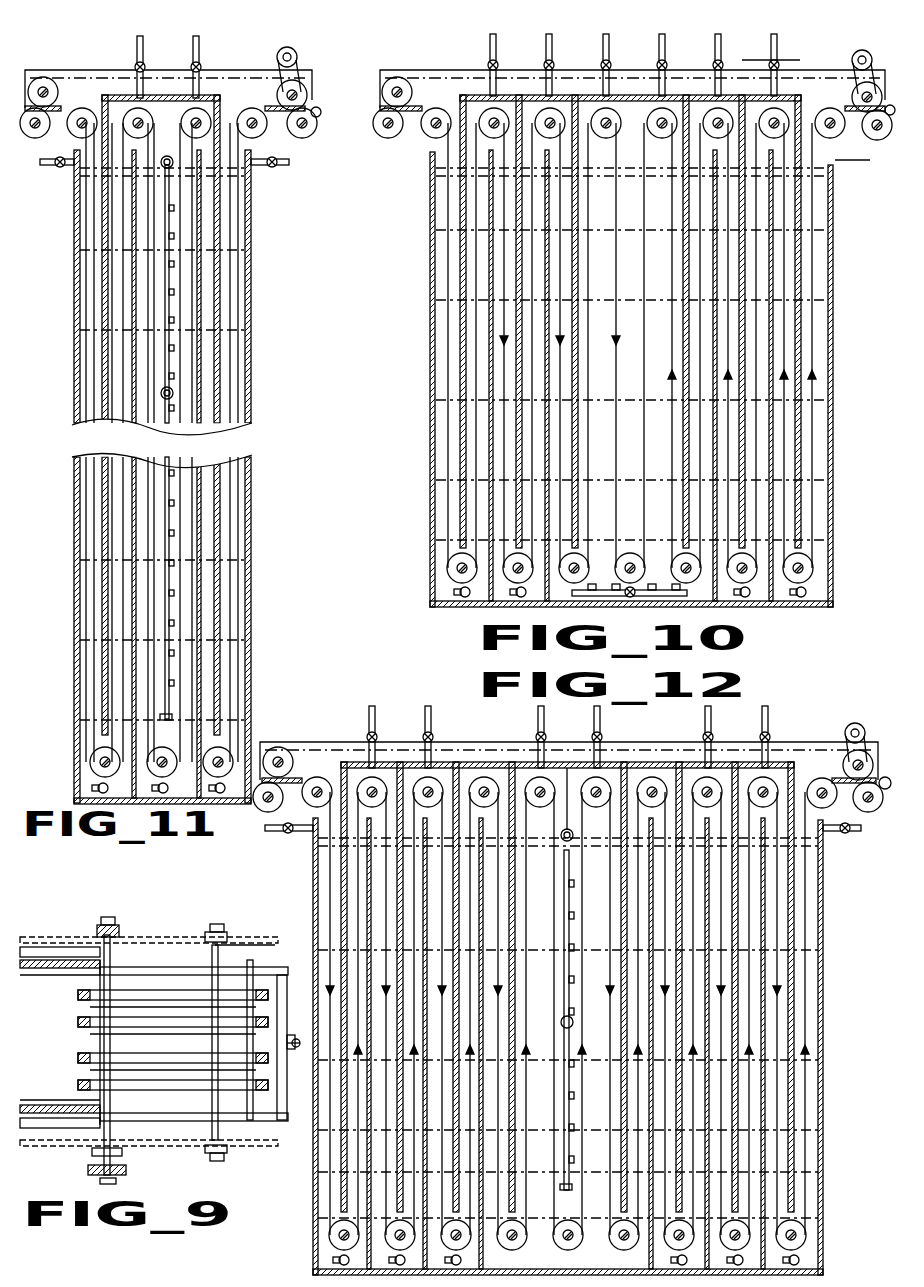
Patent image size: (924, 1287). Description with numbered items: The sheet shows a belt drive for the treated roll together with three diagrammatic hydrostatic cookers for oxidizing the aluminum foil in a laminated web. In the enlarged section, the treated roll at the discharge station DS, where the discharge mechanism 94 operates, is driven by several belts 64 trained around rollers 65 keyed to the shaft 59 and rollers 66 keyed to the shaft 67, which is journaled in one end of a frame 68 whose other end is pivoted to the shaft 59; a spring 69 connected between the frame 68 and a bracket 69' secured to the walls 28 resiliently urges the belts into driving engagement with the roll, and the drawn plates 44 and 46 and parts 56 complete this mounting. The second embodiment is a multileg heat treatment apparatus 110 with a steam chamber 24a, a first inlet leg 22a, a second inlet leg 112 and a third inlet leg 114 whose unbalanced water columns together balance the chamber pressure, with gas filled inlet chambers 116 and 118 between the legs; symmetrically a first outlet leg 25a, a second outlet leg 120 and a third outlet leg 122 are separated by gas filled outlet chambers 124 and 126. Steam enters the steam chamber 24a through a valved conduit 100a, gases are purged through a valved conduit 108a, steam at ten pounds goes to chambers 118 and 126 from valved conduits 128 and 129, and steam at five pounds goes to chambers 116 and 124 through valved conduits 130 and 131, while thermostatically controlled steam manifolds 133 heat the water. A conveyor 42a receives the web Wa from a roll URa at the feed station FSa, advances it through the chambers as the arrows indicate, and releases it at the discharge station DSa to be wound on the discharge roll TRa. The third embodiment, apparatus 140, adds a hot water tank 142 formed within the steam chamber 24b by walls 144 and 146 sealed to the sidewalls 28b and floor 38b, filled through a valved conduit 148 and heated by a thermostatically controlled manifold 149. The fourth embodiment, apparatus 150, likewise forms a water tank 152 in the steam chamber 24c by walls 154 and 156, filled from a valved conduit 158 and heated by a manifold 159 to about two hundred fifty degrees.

In FIG. 11, the heat treatment apparatus 140 is at (262, 38).
In FIG. 11, the sidewalls 28b is at (100, 72).
In FIG. 11, the steam chamber 24b is at (165, 108).
In FIG. 11, the valved conduit 148 is at (167, 156).
In FIG. 11, the hot water tank 142 is at (185, 232).
In FIG. 11, the wall 146 is at (185, 256).
In FIG. 11, the wall 144 is at (135, 298).
In FIG. 11, the valved thermostatically controlled manifold 149 is at (167, 466).
In FIG. 11, the floor 38b is at (85, 797).
In FIG. 10, the conveyor 42a is at (455, 68).
In FIG. 10, the web Wa is at (392, 108).
In FIG. 10, the untreated roll URa is at (383, 131).
In FIG. 10, the feed station FSa is at (428, 130).
In FIG. 10, the first inlet leg 22a is at (430, 216).
In FIG. 10, the valved conduit 130 is at (490, 40).
In FIG. 10, the valved conduit 128 is at (546, 40).
In FIG. 10, the valved conduit 100a is at (603, 44).
In FIG. 10, the valved conduit 108a is at (660, 44).
In FIG. 10, the steam chamber 24a is at (620, 112).
In FIG. 10, the valved conduit 129 is at (718, 40).
In FIG. 10, the heat treatment apparatus 110 is at (742, 52).
In FIG. 10, the valved conduit 131 is at (778, 50).
In FIG. 10, the discharge roll TRa is at (884, 138).
In FIG. 10, the discharge station DSa is at (855, 150).
In FIG. 10, the first outlet leg 25a is at (828, 293).
In FIG. 10, the second outlet leg 120 is at (768, 345).
In FIG. 10, the third outlet leg 122 is at (710, 400).
In FIG. 10, the intermediate gas filled outlet chamber 124 is at (793, 422).
In FIG. 10, the intermediate gas filled outlet chamber 126 is at (735, 470).
In FIG. 10, the second inlet leg 112 is at (495, 433).
In FIG. 10, the intermediate gas filled inlet chamber 116 is at (466, 455).
In FIG. 10, the intermediate gas filled inlet chamber 118 is at (537, 477).
In FIG. 10, the third inlet leg 114 is at (481, 497).
In FIG. 10, the thermostatically controlled steam manifolds 133 is at (700, 598).
In FIG. 12, the heat treatment apparatus 150 is at (617, 738).
In FIG. 12, the steam chamber 24c is at (488, 768).
In FIG. 12, the wall 154 is at (500, 815).
In FIG. 12, the water tank 152 is at (570, 822).
In FIG. 12, the wall 156 is at (640, 818).
In FIG. 12, the valved conduit 158 is at (562, 852).
In FIG. 12, the valved and thermostatically controlled manifold 159 is at (562, 1108).
In FIG. 9, the upper plate 44 is at (37, 945).
In FIG. 9, the lower plate 46 is at (40, 1118).
In FIG. 9, the shaft 56 is at (105, 950).
In FIG. 9, the shaft 59 is at (107, 922).
In FIG. 9, the frame 68 is at (165, 965).
In FIG. 9, the walls 28 is at (196, 940).
In FIG. 9, the discharge station DS is at (230, 920).
In FIG. 9, the shaft 67 is at (250, 958).
In FIG. 9, the discharge mechanism 94 is at (188, 1125).
In FIG. 9, the belts 64 is at (85, 1062).
In FIG. 9, the rollers 65 is at (158, 1085).
In FIG. 9, the rollers 66 is at (240, 1062).
In FIG. 9, the spring 69 is at (294, 1047).
In FIG. 9, the bracket 69' is at (297, 1092).